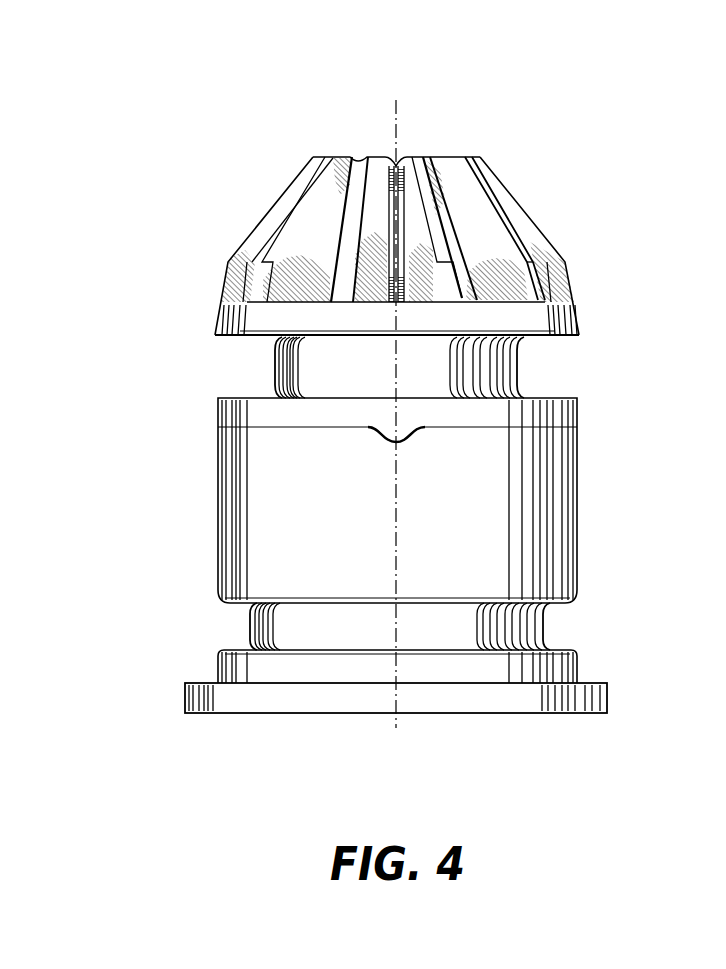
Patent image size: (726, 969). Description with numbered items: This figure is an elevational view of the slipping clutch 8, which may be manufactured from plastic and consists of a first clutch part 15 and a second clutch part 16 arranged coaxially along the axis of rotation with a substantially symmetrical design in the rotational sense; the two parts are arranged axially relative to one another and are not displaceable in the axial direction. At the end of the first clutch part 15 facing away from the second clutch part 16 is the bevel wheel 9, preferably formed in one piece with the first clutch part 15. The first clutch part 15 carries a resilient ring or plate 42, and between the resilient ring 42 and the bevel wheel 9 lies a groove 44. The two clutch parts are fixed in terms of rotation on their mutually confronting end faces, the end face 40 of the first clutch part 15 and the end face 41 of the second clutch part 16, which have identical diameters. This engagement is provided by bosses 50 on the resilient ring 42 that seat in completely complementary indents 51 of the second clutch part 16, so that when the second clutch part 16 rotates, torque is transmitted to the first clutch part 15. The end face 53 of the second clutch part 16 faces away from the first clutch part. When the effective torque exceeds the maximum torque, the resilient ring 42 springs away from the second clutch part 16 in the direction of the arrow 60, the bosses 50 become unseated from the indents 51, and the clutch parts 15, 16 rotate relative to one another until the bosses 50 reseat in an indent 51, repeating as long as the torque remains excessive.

The slipping clutch 8 is at (436, 124).
The bevel wheel 9 is at (478, 228).
The groove 44 is at (548, 348).
The first clutch part 15 is at (495, 380).
The arrow 60 is at (231, 352).
The bosses 50 is at (387, 428).
The indents 51 is at (405, 442).
The end face of the first clutch part 40 is at (540, 428).
The resilient ring or plate 42 is at (278, 415).
The end face of the second clutch part 41 is at (469, 421).
The second clutch part 16 is at (497, 565).
The end face 53 is at (482, 714).